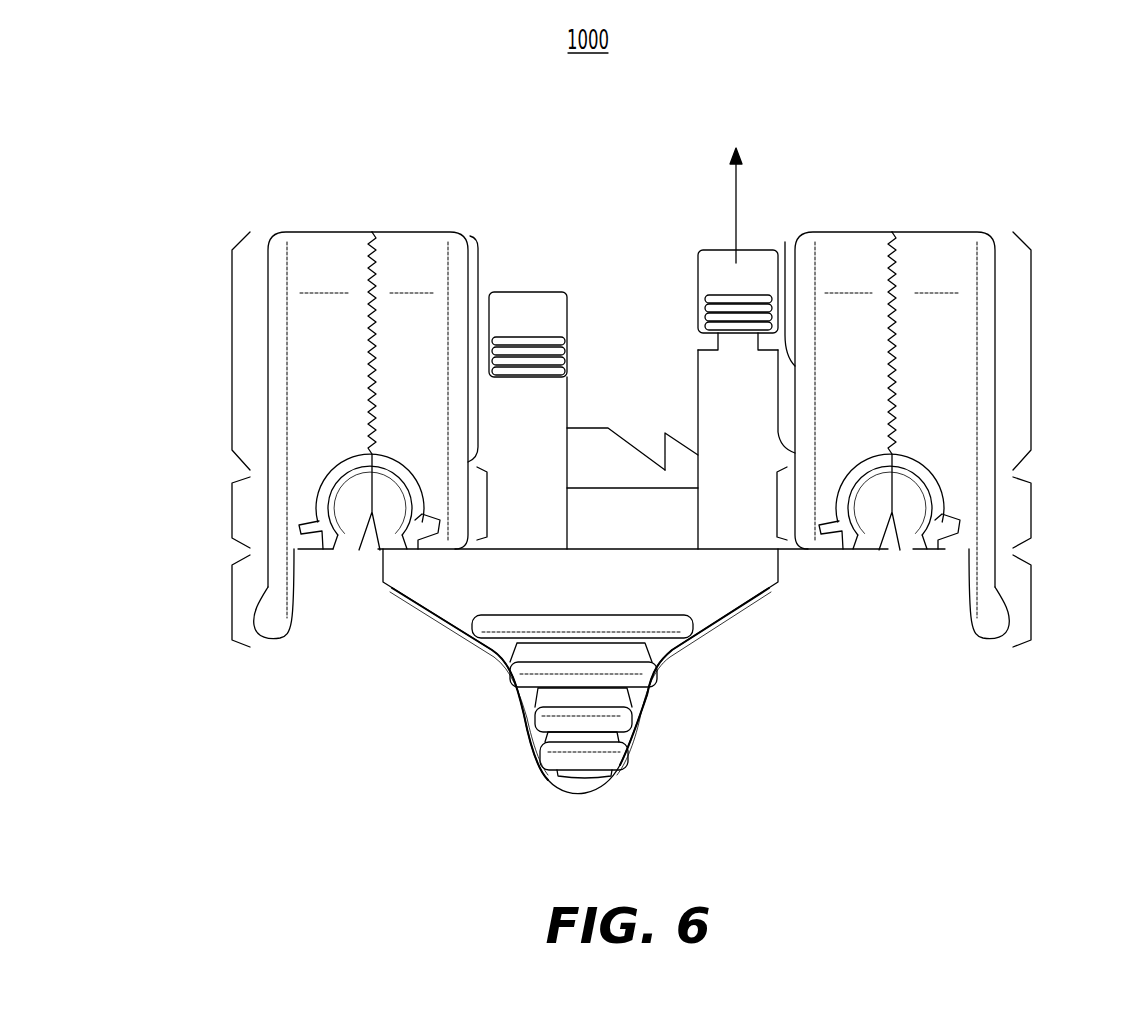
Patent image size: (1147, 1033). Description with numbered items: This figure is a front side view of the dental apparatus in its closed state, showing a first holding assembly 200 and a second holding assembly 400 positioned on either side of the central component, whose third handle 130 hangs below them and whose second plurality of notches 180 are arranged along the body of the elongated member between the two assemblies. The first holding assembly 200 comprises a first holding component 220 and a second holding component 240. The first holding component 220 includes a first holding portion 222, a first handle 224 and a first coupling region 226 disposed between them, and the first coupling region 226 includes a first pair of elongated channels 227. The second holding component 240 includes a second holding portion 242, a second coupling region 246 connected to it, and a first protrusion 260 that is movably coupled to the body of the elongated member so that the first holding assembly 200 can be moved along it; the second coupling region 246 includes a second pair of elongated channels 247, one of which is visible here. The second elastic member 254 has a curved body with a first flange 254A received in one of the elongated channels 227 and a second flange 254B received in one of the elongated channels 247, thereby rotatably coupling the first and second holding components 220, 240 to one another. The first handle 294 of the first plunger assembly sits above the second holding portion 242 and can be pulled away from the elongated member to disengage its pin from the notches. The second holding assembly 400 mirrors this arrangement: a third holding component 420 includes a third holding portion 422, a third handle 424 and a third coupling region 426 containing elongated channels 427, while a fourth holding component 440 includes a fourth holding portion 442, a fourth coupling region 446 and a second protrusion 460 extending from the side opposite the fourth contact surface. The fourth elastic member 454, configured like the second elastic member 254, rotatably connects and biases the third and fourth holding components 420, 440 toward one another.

The first holding assembly 200 is at (208, 195).
The first holding component 220 is at (322, 242).
The second holding component 240 is at (420, 242).
The second holding portion 242 is at (482, 364).
The first handle 294 is at (557, 300).
The second coupling region 246 is at (490, 501).
The first protrusion 260 is at (570, 472).
The second plurality of notches 180 is at (643, 453).
The fourth holding portion 442 is at (780, 356).
The fourth holding component 440 is at (840, 232).
The third holding component 420 is at (945, 232).
The second holding assembly 400 is at (1037, 162).
The first holding portion 222 is at (232, 358).
The first coupling region 226 is at (232, 512).
The first handle 224 is at (232, 602).
The third holding portion 422 is at (1031, 358).
The third coupling region 426 is at (1031, 508).
The third handle 424 is at (1031, 602).
The first pair of elongated channels 227 is at (303, 530).
The first flange 254A is at (323, 545).
The second elastic member 254 is at (353, 477).
The second flange 254B is at (381, 549).
The second pair of elongated channels 247 is at (439, 535).
The third handle 130 is at (606, 785).
The second protrusion 460 is at (698, 520).
The fourth coupling region 446 is at (777, 503).
The fourth elastic member 454 is at (907, 477).
The elongated channels 427 is at (940, 548).